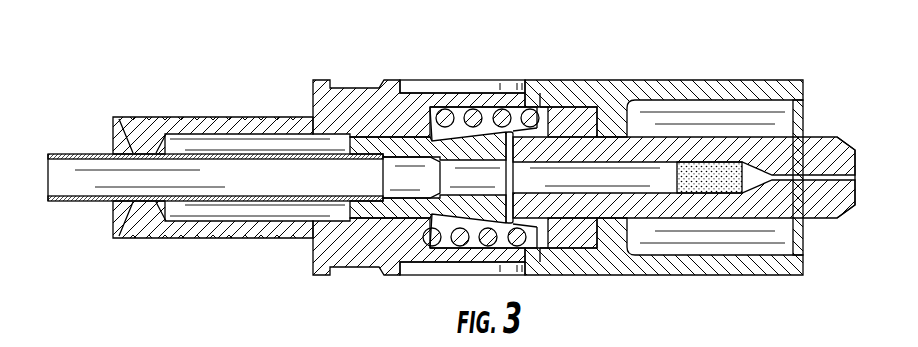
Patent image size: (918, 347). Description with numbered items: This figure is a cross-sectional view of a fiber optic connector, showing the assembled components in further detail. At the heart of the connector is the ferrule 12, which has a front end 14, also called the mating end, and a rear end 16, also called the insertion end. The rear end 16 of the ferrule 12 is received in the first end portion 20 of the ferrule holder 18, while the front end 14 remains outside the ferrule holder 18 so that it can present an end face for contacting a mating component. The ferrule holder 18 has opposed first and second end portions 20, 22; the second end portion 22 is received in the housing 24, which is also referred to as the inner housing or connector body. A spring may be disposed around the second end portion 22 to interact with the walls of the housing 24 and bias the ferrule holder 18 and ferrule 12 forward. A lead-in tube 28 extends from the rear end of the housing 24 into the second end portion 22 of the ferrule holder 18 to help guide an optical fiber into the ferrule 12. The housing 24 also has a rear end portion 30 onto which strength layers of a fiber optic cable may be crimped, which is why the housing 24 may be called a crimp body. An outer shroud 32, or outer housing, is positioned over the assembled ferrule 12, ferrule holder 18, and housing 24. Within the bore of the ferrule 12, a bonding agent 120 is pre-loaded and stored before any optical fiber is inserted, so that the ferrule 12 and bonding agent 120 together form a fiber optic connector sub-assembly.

The ferrule 12 is at (747, 126).
The front end 14 is at (855, 158).
The rear end 16 is at (513, 203).
The ferrule holder 18 is at (490, 115).
The first end portion 20 is at (565, 108).
The second end portion 22 is at (378, 142).
The housing 24 is at (303, 100).
The lead-in tube 28 is at (62, 154).
The rear end portion 30 is at (113, 120).
The outer shroud 32 is at (662, 80).
The bonding agent 120 is at (723, 187).